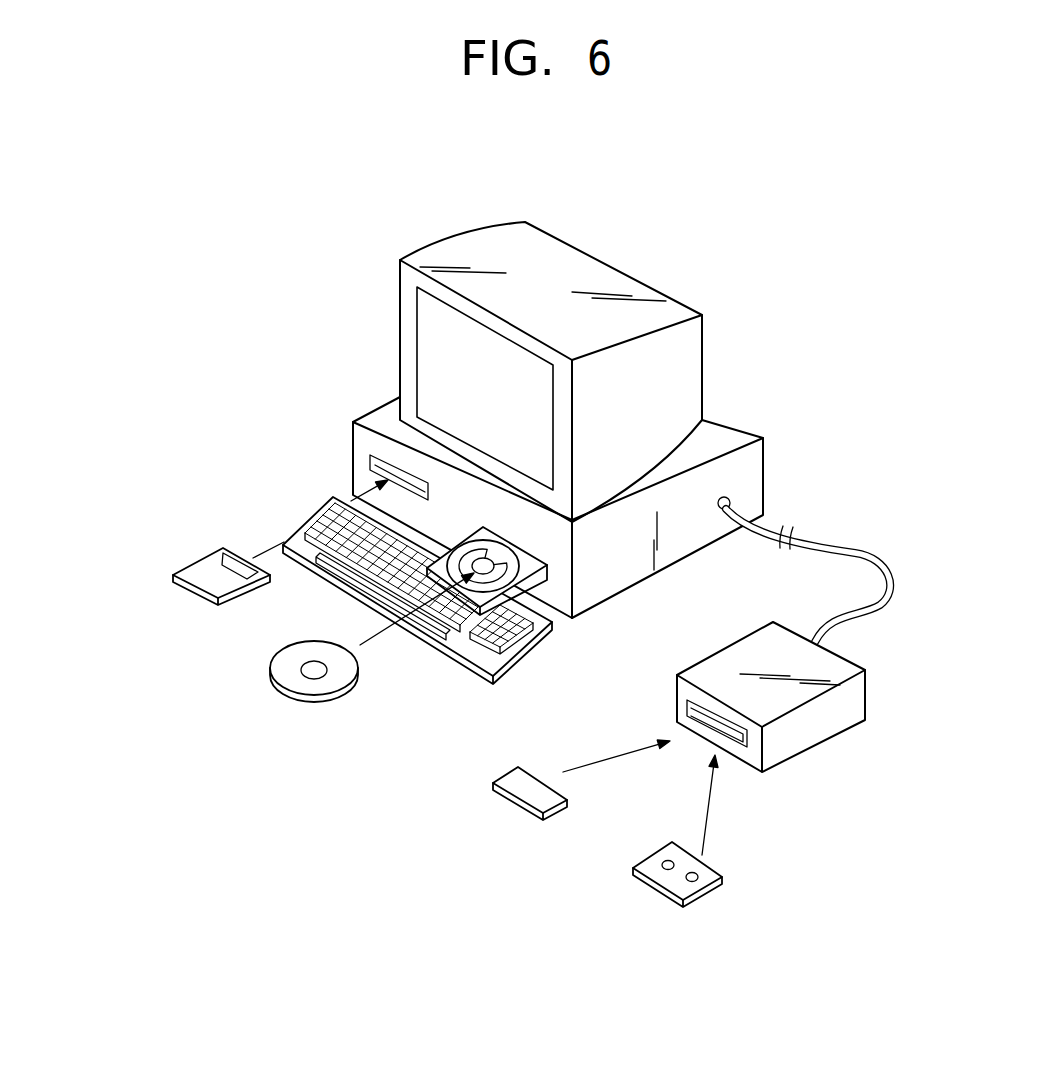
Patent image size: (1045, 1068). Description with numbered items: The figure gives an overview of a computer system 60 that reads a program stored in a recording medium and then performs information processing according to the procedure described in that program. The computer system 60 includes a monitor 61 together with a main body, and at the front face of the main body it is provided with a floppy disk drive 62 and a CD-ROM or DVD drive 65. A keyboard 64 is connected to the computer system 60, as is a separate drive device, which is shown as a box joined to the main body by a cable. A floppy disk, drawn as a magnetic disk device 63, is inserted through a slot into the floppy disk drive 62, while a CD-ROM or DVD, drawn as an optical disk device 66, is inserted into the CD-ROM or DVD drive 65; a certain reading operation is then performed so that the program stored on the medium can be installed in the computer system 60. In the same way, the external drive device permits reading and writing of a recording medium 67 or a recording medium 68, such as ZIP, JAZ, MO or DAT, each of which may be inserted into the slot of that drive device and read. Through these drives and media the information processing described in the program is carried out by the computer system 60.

The computer system 60 is at (580, 432).
The monitor 61 is at (703, 362).
The floppy disk drive 62 is at (352, 462).
The magnetic disk device 63 is at (190, 567).
The keyboard 64 is at (530, 657).
The CD-ROM or DVD drive 65 is at (539, 550).
The optical disk device 66 is at (322, 708).
The recording medium 67 is at (513, 802).
The recording medium 68 is at (670, 898).